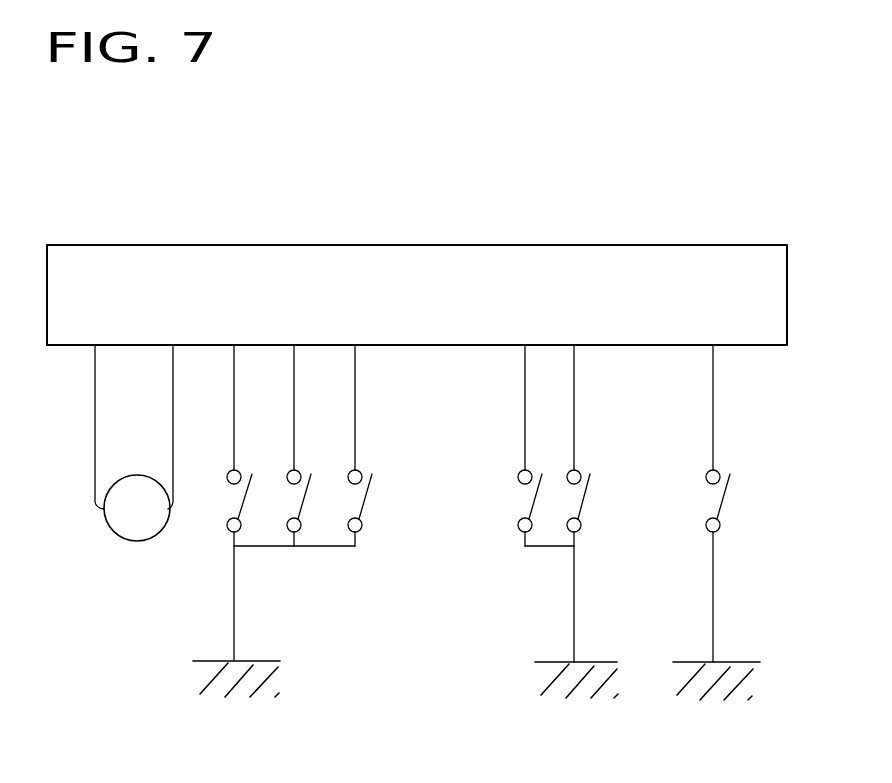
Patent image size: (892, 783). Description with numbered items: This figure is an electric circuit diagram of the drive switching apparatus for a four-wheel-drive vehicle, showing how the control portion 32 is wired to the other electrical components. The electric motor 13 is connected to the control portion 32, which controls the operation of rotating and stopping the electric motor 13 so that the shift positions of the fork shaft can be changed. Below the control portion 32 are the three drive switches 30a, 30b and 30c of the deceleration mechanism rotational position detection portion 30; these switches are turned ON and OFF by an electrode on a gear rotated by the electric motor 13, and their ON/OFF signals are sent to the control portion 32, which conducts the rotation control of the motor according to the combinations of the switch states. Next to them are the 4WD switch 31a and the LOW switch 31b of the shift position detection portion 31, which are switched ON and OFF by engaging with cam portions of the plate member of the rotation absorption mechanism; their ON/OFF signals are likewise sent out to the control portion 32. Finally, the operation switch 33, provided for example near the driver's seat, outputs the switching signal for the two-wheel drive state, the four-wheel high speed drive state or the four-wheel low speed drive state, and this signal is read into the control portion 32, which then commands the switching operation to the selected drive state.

The electric motor 13 is at (112, 523).
The deceleration mechanism rotational position detection portion 30 is at (310, 503).
The drive switch 30a is at (237, 498).
The drive switch 30b is at (288, 498).
The drive switch 30c is at (357, 497).
The shift position detection portion 31 is at (558, 503).
The 4WD switch 31a is at (517, 502).
The LOW switch 31b is at (572, 500).
The control portion 32 is at (445, 245).
The operation switch 33 is at (741, 485).